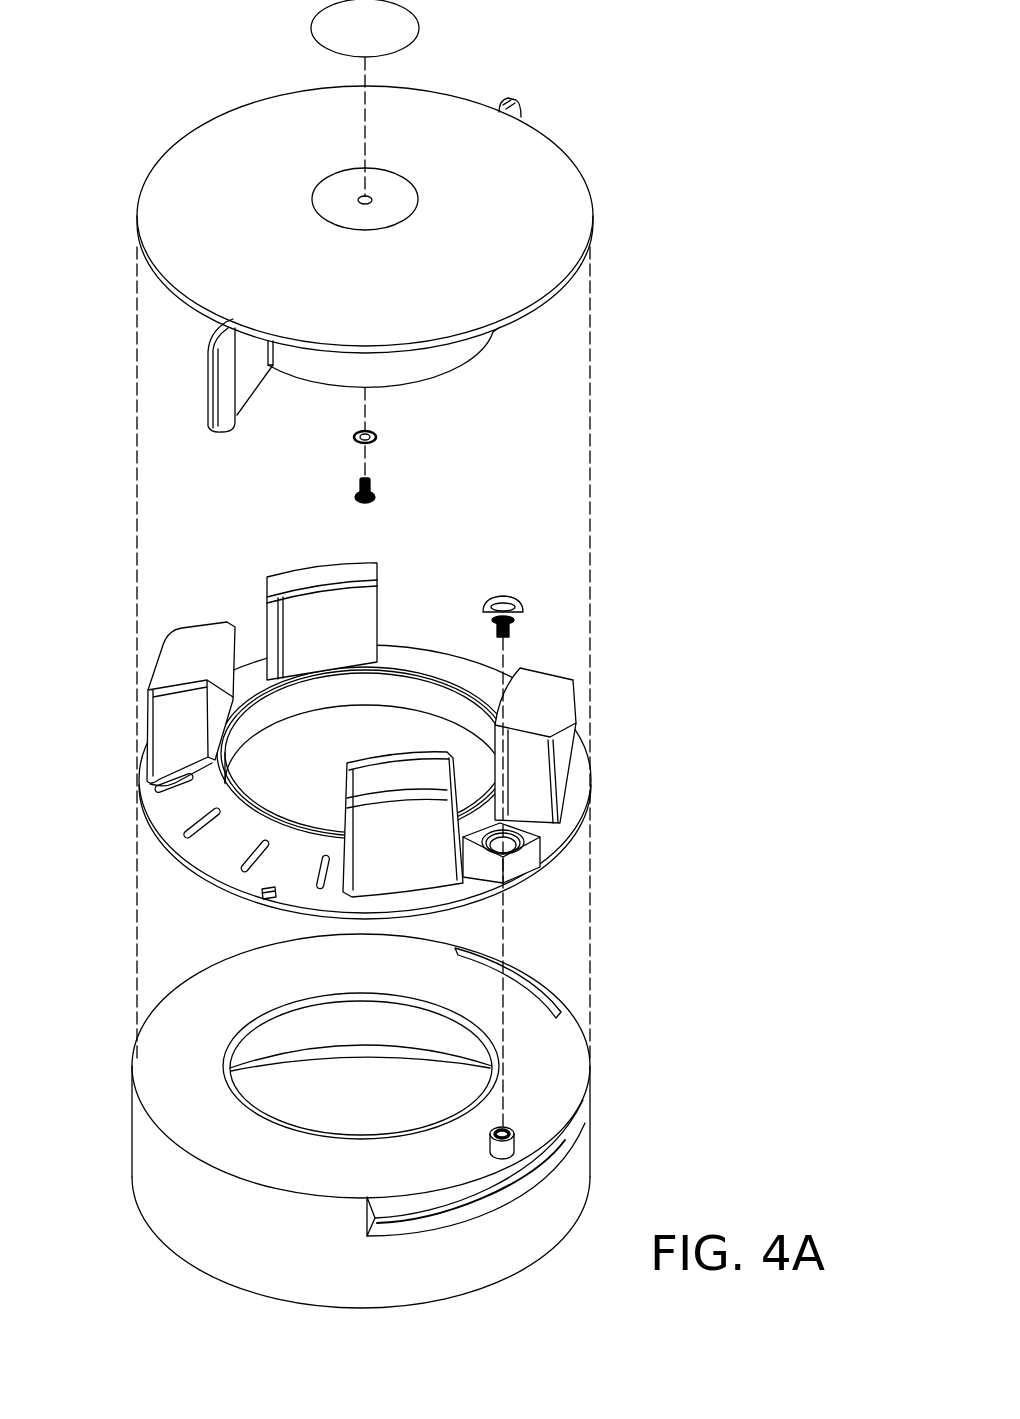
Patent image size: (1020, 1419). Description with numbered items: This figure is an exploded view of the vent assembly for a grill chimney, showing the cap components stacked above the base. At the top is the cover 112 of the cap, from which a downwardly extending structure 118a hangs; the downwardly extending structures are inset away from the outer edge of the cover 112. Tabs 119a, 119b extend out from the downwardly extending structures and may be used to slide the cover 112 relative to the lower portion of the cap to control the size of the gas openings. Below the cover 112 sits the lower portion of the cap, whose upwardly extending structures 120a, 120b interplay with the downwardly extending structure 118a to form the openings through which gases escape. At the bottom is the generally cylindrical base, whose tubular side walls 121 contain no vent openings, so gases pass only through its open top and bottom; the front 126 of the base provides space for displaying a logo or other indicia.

The cover 112 is at (543, 200).
The downwardly extending structure 118a is at (437, 357).
The tab 119a is at (227, 370).
The tab 119b is at (513, 102).
The upwardly extending structure 120a is at (180, 658).
The upwardly extending structure 120b is at (552, 687).
The tubular side walls 121 is at (525, 847).
The front 126 is at (205, 1217).